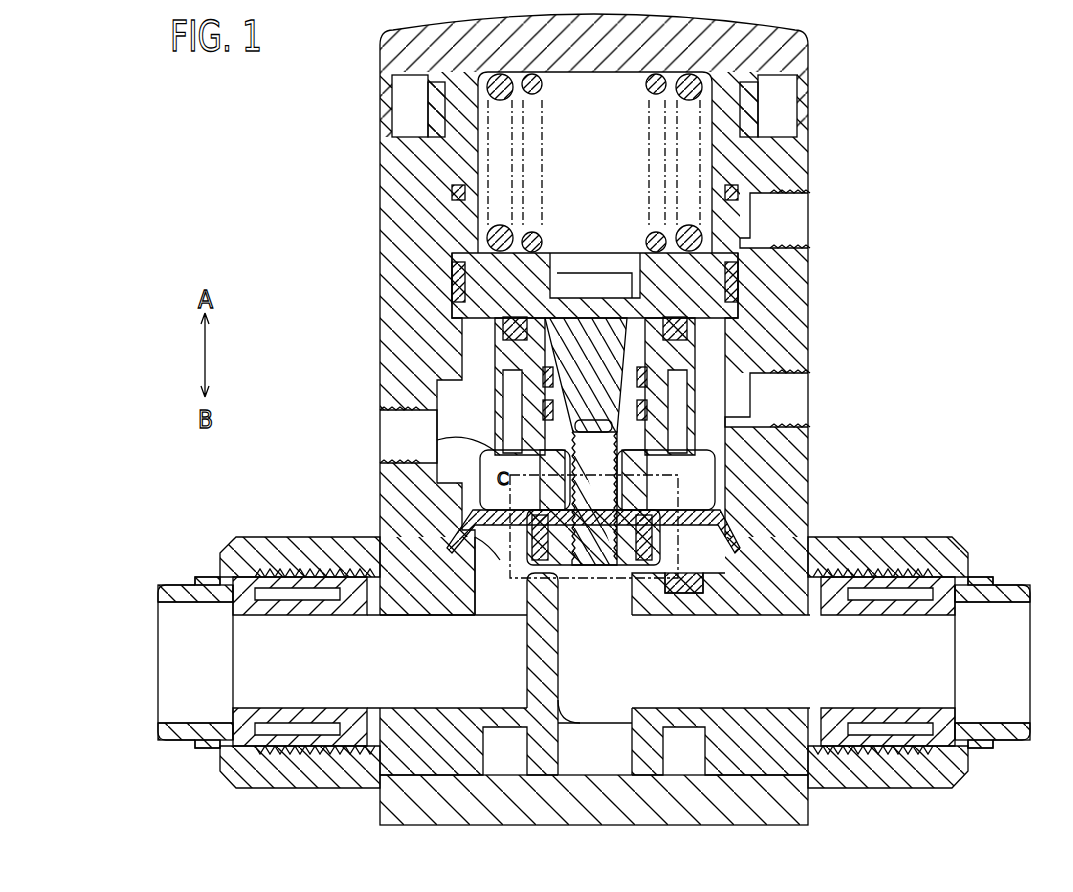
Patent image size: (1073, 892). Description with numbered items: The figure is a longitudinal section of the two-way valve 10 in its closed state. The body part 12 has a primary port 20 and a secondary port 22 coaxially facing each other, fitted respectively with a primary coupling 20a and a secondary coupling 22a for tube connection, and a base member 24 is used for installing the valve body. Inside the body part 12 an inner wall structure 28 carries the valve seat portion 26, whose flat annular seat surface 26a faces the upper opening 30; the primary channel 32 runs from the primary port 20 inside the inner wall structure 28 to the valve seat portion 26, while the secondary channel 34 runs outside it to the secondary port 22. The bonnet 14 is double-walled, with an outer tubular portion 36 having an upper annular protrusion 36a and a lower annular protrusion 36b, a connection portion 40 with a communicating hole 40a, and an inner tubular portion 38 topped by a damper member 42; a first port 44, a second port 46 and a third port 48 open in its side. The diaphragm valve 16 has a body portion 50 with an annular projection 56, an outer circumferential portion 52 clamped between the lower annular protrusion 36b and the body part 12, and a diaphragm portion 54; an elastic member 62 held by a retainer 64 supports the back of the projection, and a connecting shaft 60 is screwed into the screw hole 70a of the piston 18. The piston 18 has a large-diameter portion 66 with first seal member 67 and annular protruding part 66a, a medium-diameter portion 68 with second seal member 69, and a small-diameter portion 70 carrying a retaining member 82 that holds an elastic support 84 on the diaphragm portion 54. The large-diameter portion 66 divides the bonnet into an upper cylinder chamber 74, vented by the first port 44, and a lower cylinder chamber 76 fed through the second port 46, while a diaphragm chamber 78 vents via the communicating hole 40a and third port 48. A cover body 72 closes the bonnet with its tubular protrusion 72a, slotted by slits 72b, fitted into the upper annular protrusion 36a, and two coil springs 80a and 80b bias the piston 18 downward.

The two-way valve 10 is at (264, 104).
The body part 12 is at (757, 766).
The bonnet 14 is at (370, 267).
The diaphragm valve 16 is at (607, 587).
The piston 18 is at (606, 244).
The primary port 20 is at (940, 660).
The primary coupling 20a is at (900, 775).
The secondary port 22 is at (250, 655).
The secondary coupling 22a is at (305, 775).
The base member 24 is at (510, 800).
The valve seat portion 26 is at (515, 590).
The seat surface 26a is at (485, 575).
The inner wall structure 28 is at (540, 635).
The upper opening 30 is at (450, 580).
The primary channel 32 is at (790, 665).
The secondary channel 34 is at (405, 660).
The outer tubular portion 36 is at (390, 200).
The upper annular protrusion 36a is at (425, 110).
The lower annular protrusion 36b is at (440, 505).
The inner tubular portion 38 is at (520, 345).
The connection portion 40 is at (500, 375).
The communicating hole 40a is at (420, 480).
The damper member 42 is at (505, 325).
The first port 44 is at (790, 220).
The second port 46 is at (790, 410).
The third port 48 is at (400, 445).
The body portion 50 is at (605, 565).
The outer circumferential portion 52 is at (705, 530).
The diaphragm portion 54 is at (685, 578).
The annular projection 56 is at (640, 567).
The connecting shaft 60 is at (640, 470).
The elastic member 62 is at (540, 565).
The retainer 64 is at (555, 565).
The large-diameter portion 66 is at (720, 310).
The annular protruding part 66a is at (538, 238).
The first seal member 67 is at (730, 295).
The medium-diameter portion 68 is at (670, 350).
The second seal member 69 is at (650, 365).
The small-diameter portion 70 is at (690, 485).
The screw hole 70a is at (680, 405).
The cover body 72 is at (788, 41).
The tubular protrusion 72a is at (455, 150).
The slits 72b is at (455, 220).
The upper cylinder chamber 74 is at (620, 125).
The lower cylinder chamber 76 is at (730, 330).
The diaphragm chamber 78 is at (630, 480).
The coil spring 80a is at (508, 228).
The coil spring 80b is at (542, 87).
The retaining member 82 is at (735, 510).
The elastic support 84 is at (460, 527).